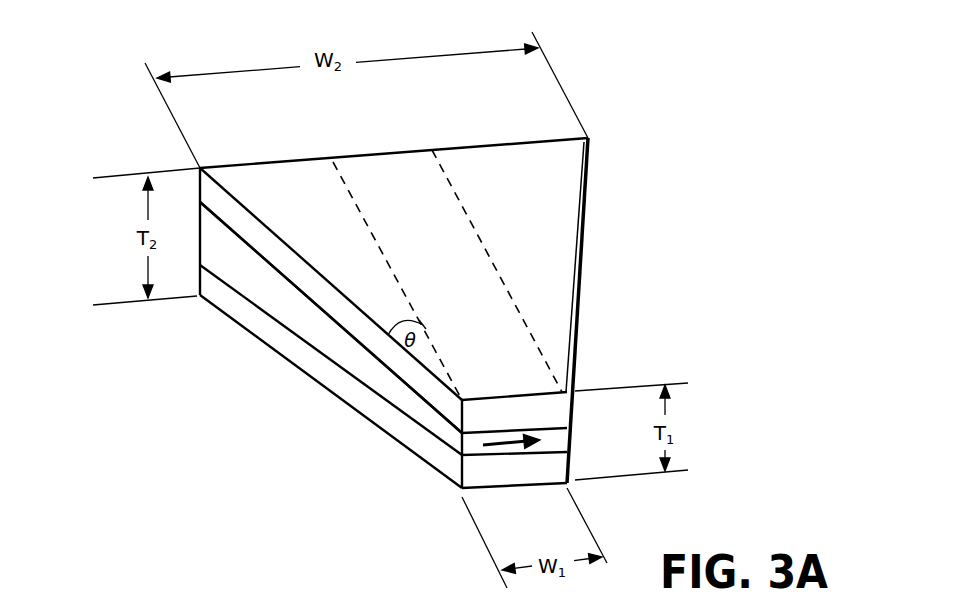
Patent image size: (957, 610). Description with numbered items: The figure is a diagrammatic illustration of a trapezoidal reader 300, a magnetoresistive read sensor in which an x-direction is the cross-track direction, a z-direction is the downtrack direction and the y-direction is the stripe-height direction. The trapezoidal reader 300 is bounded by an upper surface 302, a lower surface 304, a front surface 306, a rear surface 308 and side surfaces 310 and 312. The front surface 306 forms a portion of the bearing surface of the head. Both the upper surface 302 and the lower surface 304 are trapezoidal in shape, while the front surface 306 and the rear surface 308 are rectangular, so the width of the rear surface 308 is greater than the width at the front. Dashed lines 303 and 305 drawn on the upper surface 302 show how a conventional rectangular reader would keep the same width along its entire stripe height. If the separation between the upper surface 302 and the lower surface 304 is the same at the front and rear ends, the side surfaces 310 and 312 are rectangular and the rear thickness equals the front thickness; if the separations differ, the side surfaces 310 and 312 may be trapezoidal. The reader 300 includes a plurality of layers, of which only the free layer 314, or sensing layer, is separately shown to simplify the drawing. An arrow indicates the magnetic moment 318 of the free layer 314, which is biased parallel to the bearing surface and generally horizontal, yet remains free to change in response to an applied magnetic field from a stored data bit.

The trapezoidal reader 300 is at (624, 86).
The upper surface 302 is at (398, 218).
The dashed line 303 is at (378, 240).
The lower surface 304 is at (350, 420).
The dashed line 305 is at (478, 237).
The front surface 306 is at (510, 460).
The rear surface 308 is at (293, 163).
The side surface 310 is at (283, 337).
The side surface 312 is at (582, 318).
The free layer 314 is at (443, 435).
The magnetic moment 318 is at (515, 432).